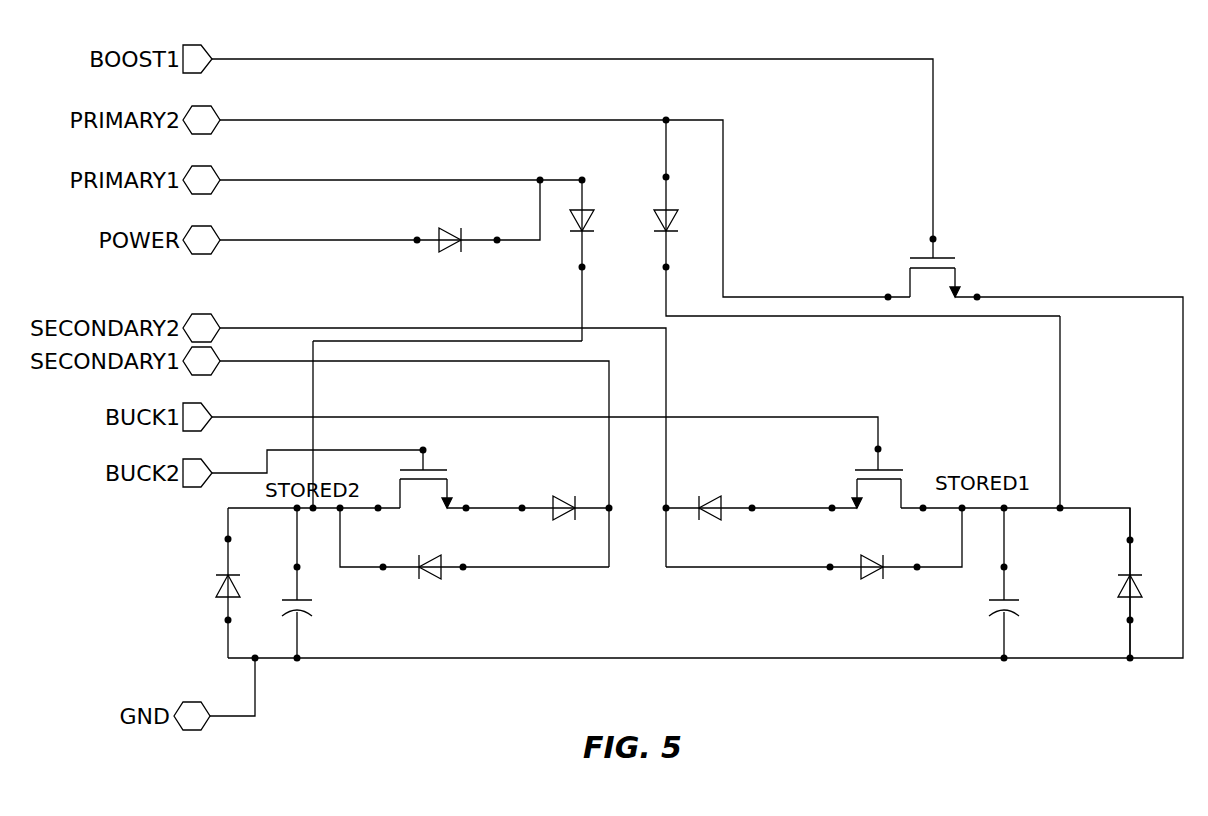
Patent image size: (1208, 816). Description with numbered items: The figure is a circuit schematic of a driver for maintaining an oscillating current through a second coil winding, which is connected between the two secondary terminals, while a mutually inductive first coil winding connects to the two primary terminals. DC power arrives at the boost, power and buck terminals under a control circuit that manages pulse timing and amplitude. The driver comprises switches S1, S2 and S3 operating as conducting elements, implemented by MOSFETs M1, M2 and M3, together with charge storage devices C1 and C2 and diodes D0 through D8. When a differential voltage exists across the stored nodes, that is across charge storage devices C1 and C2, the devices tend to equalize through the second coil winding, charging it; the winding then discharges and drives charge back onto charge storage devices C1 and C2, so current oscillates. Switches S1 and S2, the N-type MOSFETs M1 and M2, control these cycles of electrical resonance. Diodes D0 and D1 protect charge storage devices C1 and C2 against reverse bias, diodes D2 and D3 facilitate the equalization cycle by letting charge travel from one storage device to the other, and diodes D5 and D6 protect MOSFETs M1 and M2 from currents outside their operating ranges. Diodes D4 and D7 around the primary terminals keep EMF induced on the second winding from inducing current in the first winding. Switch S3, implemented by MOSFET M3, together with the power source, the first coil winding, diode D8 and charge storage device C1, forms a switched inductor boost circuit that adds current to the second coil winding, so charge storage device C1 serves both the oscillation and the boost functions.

The diode D0 is at (240, 583).
The diode D1 is at (1144, 583).
The diode D2 is at (443, 555).
The diode D3 is at (854, 555).
The diode D4 is at (429, 227).
The diode D5 is at (550, 491).
The diode D6 is at (722, 495).
The diode D7 is at (598, 260).
The diode D8 is at (857, 218).
The MOSFET M1 is at (413, 504).
The MOSFET M2 is at (888, 506).
The MOSFET M3 is at (912, 277).
The switch S1 is at (437, 466).
The switch S2 is at (890, 466).
The switch S3 is at (955, 256).
The charge storage device C1 is at (1042, 583).
The charge storage device C2 is at (343, 583).